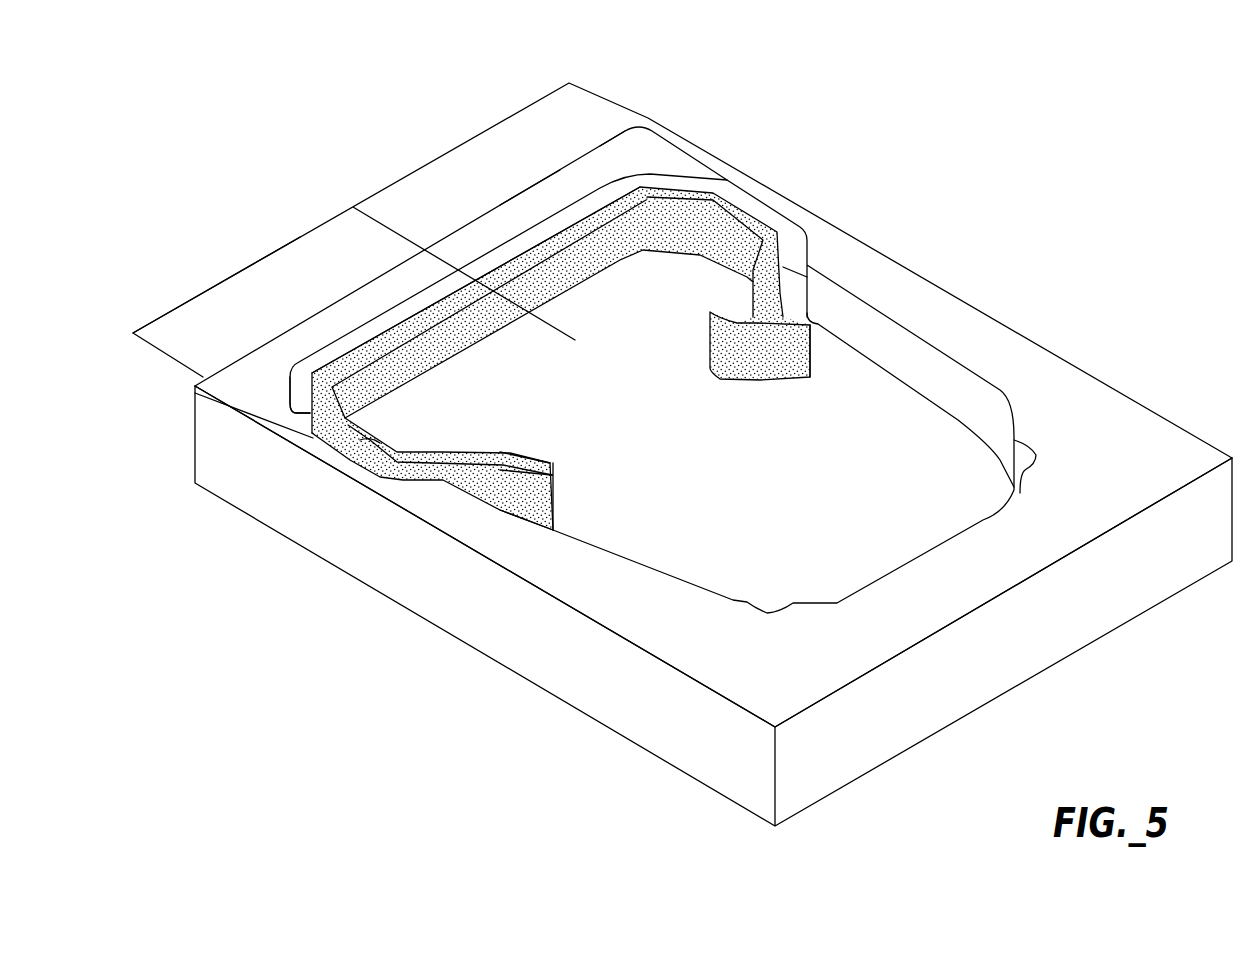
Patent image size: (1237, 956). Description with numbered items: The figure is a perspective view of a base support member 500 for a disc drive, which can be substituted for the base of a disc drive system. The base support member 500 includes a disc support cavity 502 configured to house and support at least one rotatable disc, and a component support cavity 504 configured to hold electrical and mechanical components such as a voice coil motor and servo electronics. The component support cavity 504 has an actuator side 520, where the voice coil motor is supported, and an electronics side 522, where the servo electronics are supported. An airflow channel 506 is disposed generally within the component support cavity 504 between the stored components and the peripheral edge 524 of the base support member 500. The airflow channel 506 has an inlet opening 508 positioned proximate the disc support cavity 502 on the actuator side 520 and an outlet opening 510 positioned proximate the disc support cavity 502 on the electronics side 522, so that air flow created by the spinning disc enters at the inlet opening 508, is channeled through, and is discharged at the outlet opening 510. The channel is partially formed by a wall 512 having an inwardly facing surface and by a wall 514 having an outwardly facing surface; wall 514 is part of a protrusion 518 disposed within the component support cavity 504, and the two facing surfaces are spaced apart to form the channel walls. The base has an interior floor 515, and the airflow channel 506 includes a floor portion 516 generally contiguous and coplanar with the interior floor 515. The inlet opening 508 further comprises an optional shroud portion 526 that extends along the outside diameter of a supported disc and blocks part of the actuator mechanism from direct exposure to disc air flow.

The base support member 500 is at (995, 255).
The disc support cavity 502 is at (722, 575).
The component support cavity 504 is at (450, 403).
The airflow channel 506 is at (676, 163).
The inlet opening 508 is at (830, 361).
The outlet opening 510 is at (578, 512).
The wall 512 is at (610, 190).
The wall 514 is at (368, 442).
The interior floor 515 is at (664, 425).
The floor portion 516 is at (310, 414).
The protrusion 518 is at (511, 252).
The actuator side 520 is at (460, 143).
The electronics side 522 is at (245, 263).
The peripheral edge 524 is at (540, 172).
The shroud portion 526 is at (767, 378).